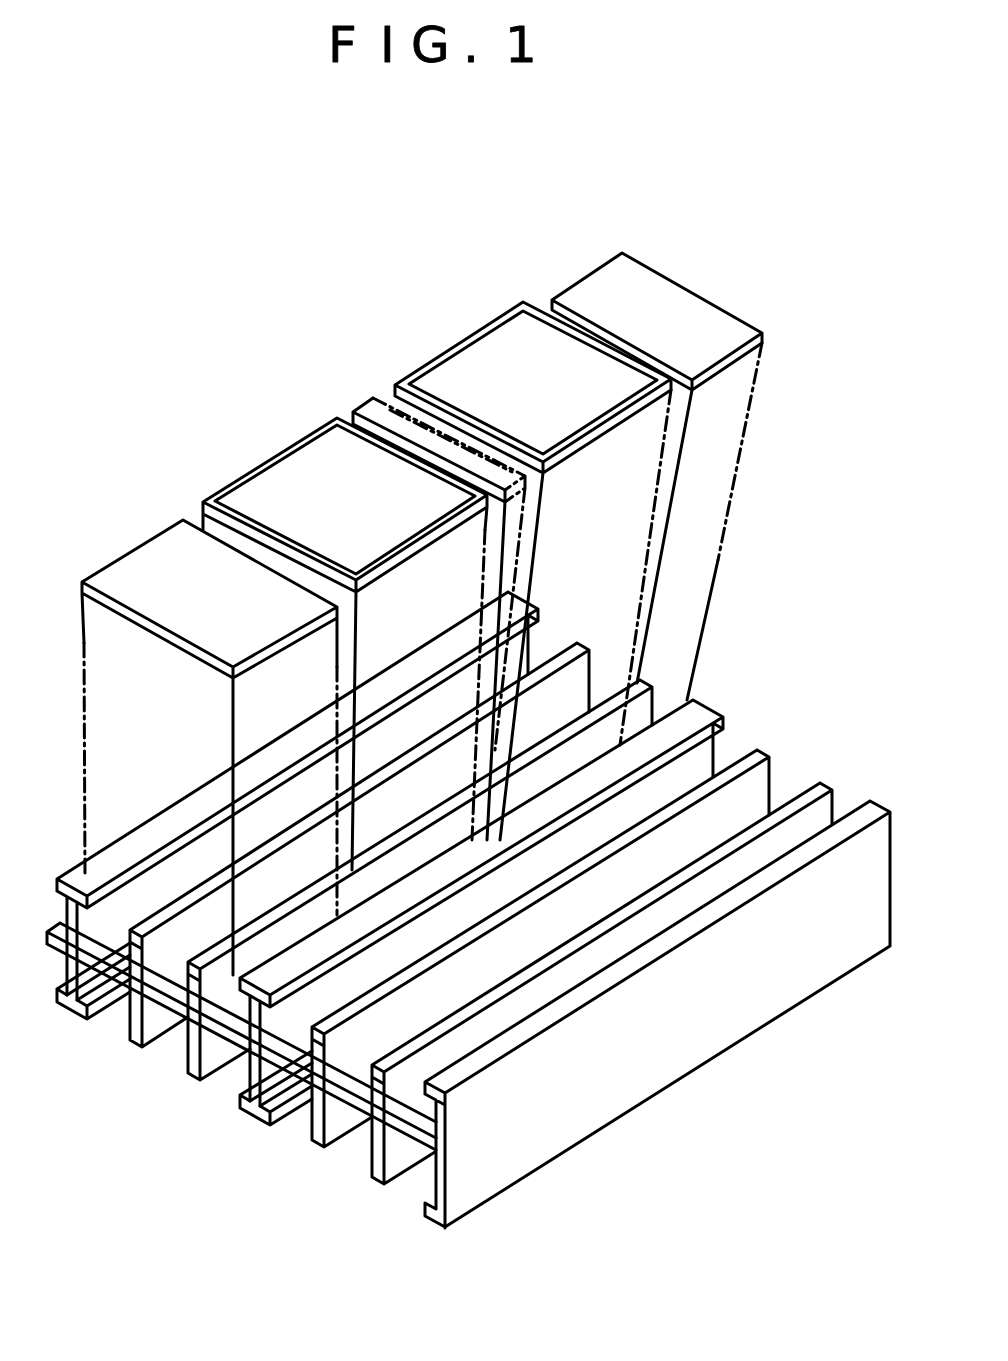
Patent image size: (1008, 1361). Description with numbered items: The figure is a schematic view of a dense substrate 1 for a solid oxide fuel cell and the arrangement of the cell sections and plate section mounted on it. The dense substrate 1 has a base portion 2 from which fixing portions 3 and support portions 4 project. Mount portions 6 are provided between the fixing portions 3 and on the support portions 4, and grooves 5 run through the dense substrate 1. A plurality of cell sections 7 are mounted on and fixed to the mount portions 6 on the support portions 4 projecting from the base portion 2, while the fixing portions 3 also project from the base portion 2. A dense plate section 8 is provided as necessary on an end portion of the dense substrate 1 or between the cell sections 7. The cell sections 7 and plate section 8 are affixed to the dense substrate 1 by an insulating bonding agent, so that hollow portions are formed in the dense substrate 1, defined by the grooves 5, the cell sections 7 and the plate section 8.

The dense substrate 1 is at (455, 1283).
The base portion 2 is at (420, 1142).
The fixing portions 3 is at (200, 1027).
The support portions 4 is at (373, 1163).
The grooves 5 is at (262, 1067).
The mount portions 6 is at (255, 1117).
The cell sections 7 is at (537, 363).
The dense plate section 8 is at (693, 318).